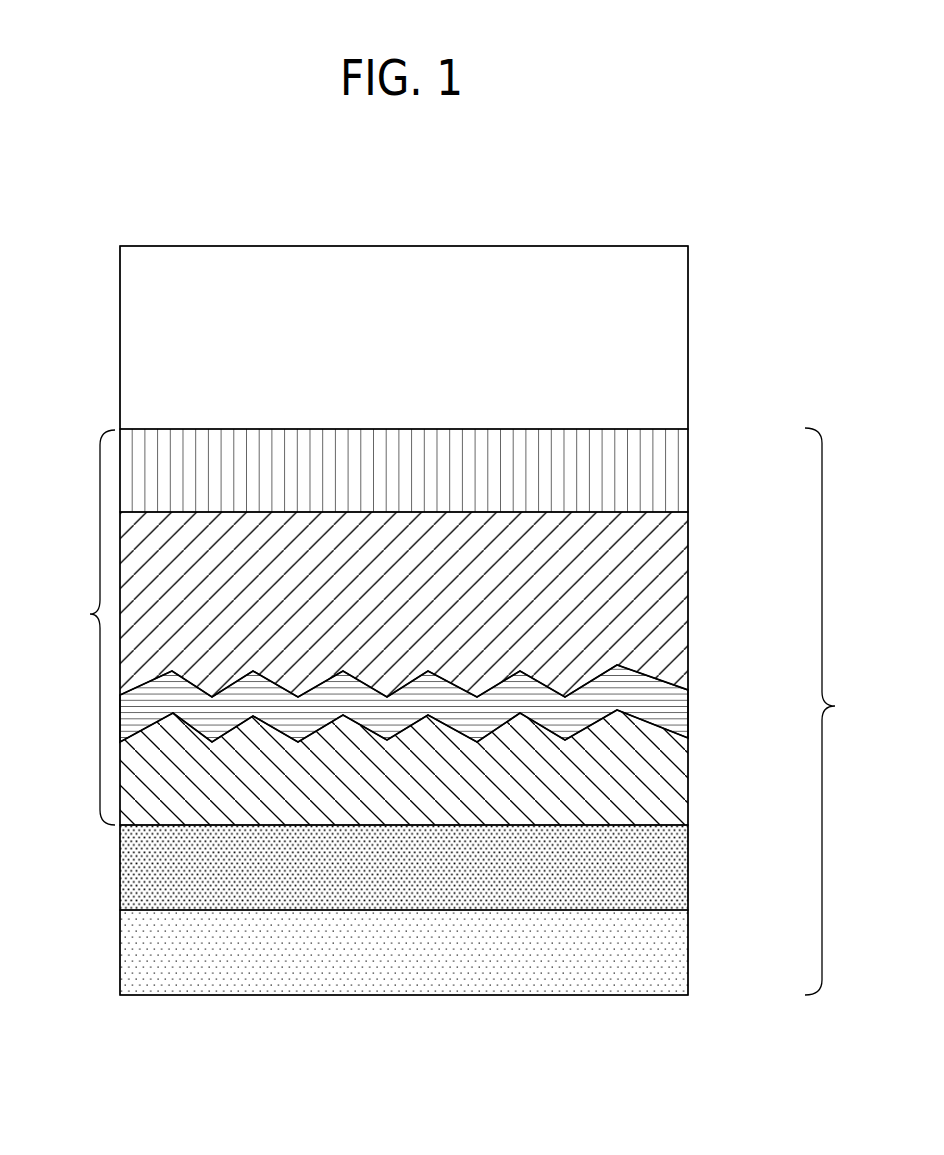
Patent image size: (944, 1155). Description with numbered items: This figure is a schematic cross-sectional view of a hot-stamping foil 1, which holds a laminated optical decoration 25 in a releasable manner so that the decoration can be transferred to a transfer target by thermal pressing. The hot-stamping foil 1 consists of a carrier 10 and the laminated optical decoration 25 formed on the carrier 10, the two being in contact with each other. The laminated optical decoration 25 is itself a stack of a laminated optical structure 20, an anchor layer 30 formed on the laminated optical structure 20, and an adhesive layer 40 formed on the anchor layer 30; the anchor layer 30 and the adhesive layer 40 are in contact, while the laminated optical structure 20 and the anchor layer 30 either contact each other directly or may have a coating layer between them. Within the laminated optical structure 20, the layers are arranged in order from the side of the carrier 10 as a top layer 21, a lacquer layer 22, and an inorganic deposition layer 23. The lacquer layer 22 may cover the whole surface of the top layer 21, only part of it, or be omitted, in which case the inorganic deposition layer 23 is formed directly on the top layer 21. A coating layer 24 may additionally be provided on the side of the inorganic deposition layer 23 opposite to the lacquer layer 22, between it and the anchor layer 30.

The hot-stamping foil 1 is at (619, 180).
The carrier 10 is at (688, 343).
The laminated optical structure 20 is at (83, 627).
The top layer 21 is at (688, 472).
The lacquer layer 22 is at (688, 605).
The inorganic deposition layer 23 is at (688, 712).
The coating layer 24 is at (688, 783).
The laminated optical decoration 25 is at (838, 711).
The anchor layer 30 is at (688, 862).
The adhesive layer 40 is at (688, 948).